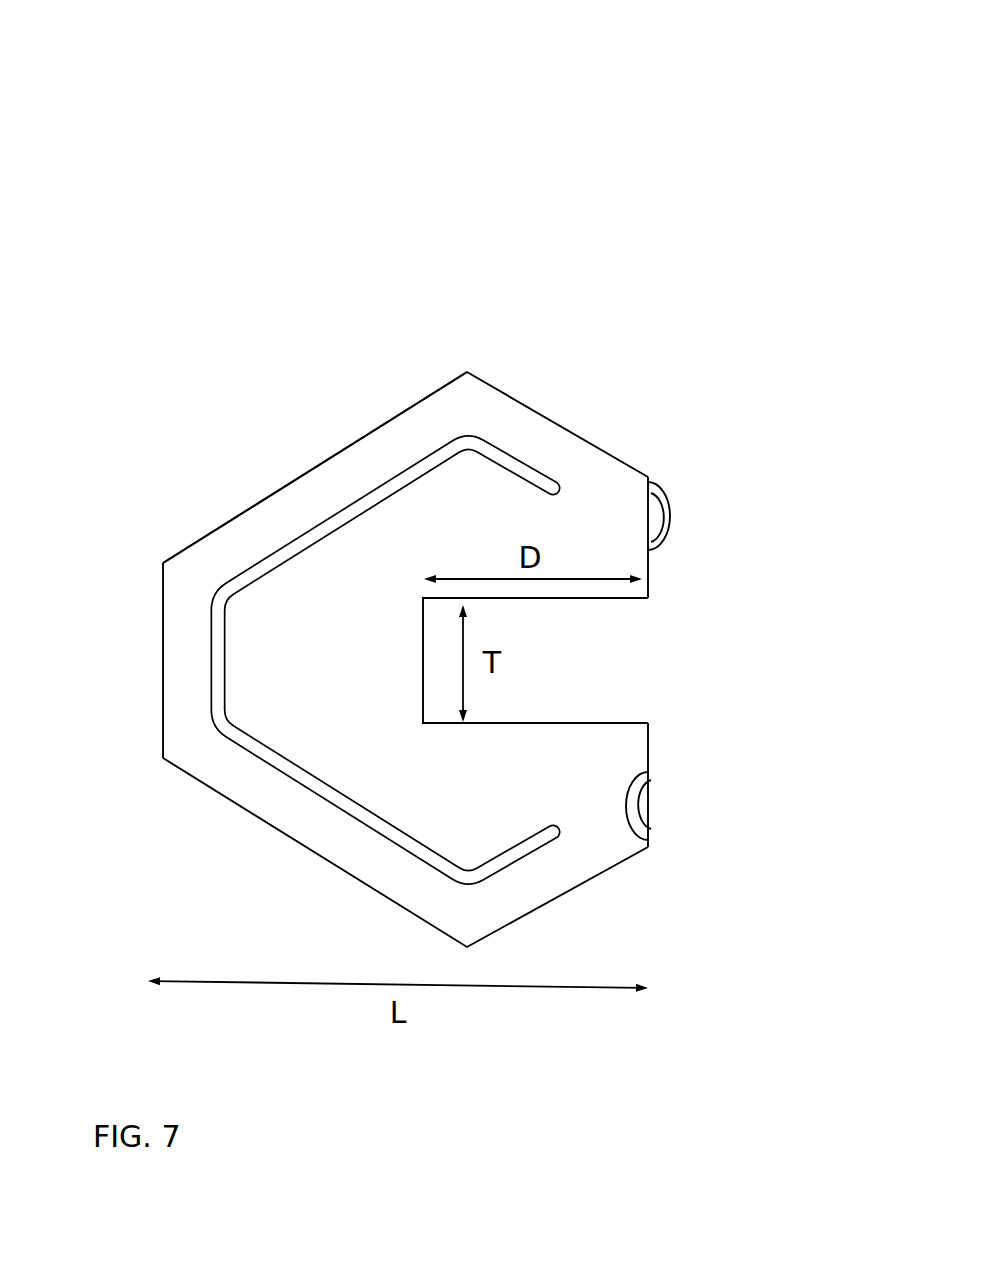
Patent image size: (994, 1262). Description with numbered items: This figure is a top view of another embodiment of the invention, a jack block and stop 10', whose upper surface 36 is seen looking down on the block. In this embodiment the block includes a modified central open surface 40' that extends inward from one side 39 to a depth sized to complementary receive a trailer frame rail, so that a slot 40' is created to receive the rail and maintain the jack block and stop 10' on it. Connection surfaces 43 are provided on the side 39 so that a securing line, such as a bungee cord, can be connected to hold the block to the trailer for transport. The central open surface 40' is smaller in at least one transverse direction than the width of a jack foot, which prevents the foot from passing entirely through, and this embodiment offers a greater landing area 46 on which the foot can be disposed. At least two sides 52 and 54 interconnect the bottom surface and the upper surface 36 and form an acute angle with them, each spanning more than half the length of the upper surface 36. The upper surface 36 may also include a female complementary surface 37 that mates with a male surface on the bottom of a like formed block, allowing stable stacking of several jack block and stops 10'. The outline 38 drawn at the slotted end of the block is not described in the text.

The jack block and stop 10' is at (445, 487).
The upper surface 36 is at (445, 590).
The side 54 is at (343, 447).
The female complementary surface 37 is at (312, 485).
The end wall 38 is at (602, 543).
The connection surfaces 43 is at (673, 506).
The landing area 46 is at (282, 681).
The central open surface 40' is at (610, 660).
The side 52 is at (305, 853).
The side 39 is at (650, 826).